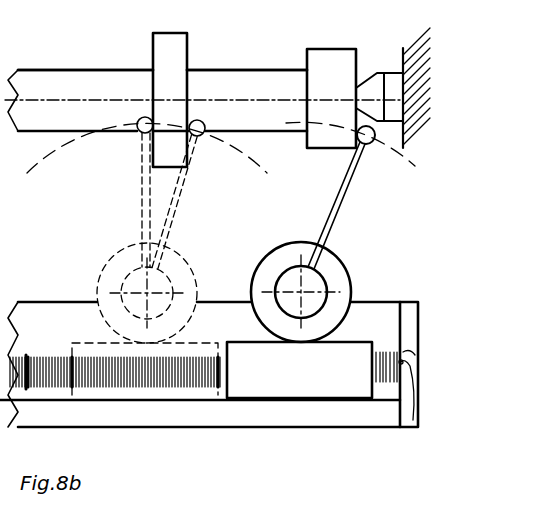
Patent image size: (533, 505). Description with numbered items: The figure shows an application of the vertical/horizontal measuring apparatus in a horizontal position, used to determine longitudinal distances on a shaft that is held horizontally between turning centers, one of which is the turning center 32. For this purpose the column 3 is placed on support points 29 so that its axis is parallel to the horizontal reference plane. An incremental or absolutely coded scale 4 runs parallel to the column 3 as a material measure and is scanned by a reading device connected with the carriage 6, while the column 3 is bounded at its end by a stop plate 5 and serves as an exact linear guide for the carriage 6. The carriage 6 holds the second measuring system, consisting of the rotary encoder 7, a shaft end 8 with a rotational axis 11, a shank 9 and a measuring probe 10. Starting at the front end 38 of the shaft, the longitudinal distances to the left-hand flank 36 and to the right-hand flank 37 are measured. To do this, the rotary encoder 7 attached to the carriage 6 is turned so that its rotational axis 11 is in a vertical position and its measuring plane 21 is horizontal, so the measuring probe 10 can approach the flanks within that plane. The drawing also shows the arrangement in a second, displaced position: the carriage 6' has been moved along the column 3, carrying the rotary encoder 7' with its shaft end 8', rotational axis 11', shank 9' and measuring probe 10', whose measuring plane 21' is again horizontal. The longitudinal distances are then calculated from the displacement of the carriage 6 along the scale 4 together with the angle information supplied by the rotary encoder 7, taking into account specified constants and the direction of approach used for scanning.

The column 3 is at (347, 420).
The scale 4 is at (28, 357).
The stop plate 5 is at (412, 302).
The carriage 6 is at (299, 407).
The carriage 6' is at (203, 408).
The rotary encoder 7 is at (301, 274).
The rotary encoder 7' is at (138, 286).
The shaft end 8 is at (317, 271).
The shaft end 8' is at (169, 276).
The shank 9 is at (334, 205).
The shank 9' is at (130, 200).
The measuring probe 10 is at (367, 159).
The measuring probe 10' is at (129, 143).
The rotational axis 11 is at (326, 292).
The rotational axis 11' is at (125, 293).
The measuring plane 21 is at (352, 159).
The measuring plane 21' is at (147, 158).
The support points 29 is at (412, 428).
The turning center 32 is at (393, 82).
The left-hand flank 36 is at (153, 55).
The right-hand flank 37 is at (188, 52).
The front end 38 is at (357, 55).